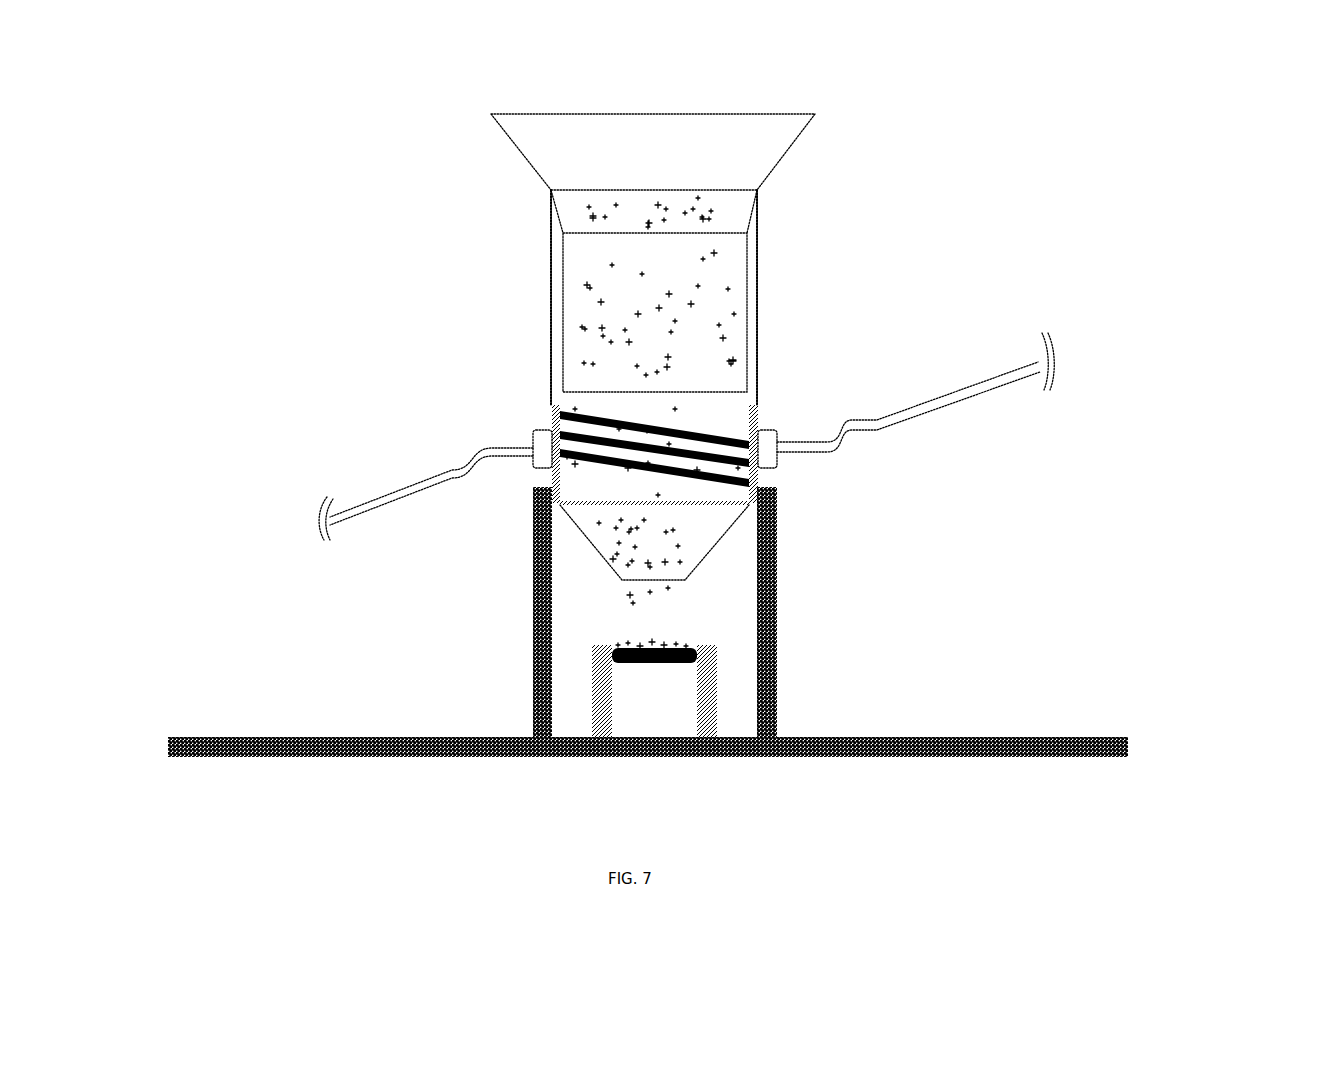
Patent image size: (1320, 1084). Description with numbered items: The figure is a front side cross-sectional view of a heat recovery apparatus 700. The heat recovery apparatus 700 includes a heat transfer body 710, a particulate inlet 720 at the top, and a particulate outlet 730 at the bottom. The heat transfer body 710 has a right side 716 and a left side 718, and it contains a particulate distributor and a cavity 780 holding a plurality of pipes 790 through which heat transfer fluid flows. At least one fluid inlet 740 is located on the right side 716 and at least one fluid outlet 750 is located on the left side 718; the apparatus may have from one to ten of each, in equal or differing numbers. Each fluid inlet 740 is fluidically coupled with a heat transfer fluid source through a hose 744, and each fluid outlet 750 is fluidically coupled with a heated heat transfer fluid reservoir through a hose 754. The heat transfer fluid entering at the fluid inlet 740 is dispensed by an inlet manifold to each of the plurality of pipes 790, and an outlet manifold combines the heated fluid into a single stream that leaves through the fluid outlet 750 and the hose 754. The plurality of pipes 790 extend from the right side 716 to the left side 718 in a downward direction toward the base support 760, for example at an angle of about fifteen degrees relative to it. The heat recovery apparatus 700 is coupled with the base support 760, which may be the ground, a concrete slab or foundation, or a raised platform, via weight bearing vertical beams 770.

The heat recovery apparatus 700 is at (953, 240).
The heat transfer body 710 is at (748, 293).
The right side 716 is at (548, 220).
The left side 718 is at (763, 225).
The particulate inlet 720 is at (513, 147).
The particulate outlet 730 is at (725, 548).
The fluid inlet 740 is at (533, 472).
The hose 744 is at (360, 518).
The fluid outlet 750 is at (780, 472).
The hose 754 is at (1013, 387).
The base support 760 is at (548, 417).
The weight bearing vertical beams 770 is at (762, 413).
The cavity 780 is at (578, 487).
The plurality of pipes 790 is at (570, 407).